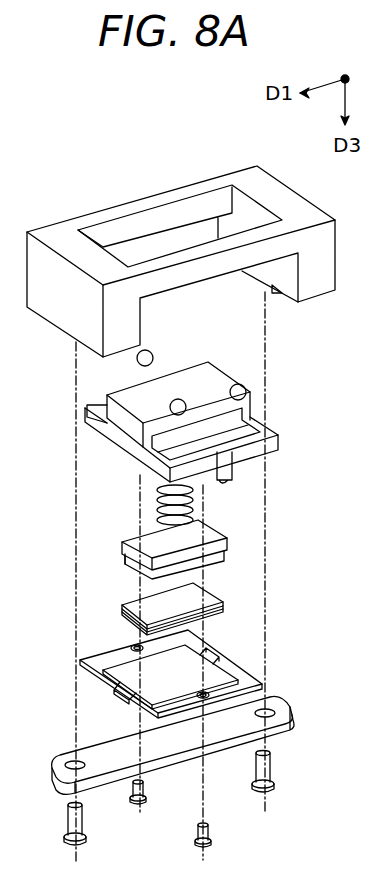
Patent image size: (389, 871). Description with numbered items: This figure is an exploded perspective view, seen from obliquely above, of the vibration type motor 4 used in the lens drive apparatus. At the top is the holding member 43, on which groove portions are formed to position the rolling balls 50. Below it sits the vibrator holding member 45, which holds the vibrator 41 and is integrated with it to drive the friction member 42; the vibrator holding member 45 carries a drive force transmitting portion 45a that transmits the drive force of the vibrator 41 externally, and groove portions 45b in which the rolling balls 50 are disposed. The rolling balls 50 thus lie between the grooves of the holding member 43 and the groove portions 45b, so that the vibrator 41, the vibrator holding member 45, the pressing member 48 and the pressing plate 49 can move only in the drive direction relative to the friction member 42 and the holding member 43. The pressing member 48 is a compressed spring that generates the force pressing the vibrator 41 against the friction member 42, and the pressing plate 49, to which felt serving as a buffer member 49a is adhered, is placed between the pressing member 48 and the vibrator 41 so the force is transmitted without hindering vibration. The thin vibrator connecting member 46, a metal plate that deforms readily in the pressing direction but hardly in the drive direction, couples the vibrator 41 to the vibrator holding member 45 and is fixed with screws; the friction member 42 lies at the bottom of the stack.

The vibration type motor 4 is at (132, 170).
The vibrator 41 is at (224, 596).
The friction member 42 is at (290, 706).
The holding member 43 is at (340, 263).
The vibrator holding member 45 is at (252, 410).
The drive force transmitting portion 45a is at (232, 482).
The groove portions 45b is at (183, 443).
The vibrator connecting member 46 is at (243, 668).
The pressing member 48 is at (200, 502).
The pressing plate 49 is at (228, 548).
The buffer member 49a is at (125, 570).
The rolling balls 50 is at (236, 384).